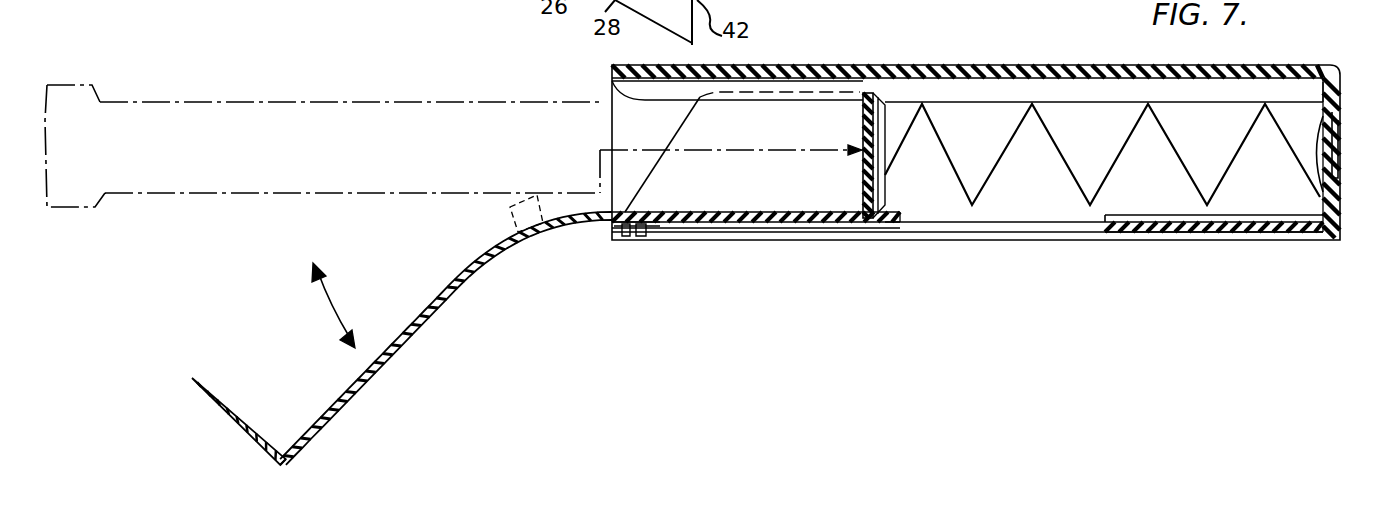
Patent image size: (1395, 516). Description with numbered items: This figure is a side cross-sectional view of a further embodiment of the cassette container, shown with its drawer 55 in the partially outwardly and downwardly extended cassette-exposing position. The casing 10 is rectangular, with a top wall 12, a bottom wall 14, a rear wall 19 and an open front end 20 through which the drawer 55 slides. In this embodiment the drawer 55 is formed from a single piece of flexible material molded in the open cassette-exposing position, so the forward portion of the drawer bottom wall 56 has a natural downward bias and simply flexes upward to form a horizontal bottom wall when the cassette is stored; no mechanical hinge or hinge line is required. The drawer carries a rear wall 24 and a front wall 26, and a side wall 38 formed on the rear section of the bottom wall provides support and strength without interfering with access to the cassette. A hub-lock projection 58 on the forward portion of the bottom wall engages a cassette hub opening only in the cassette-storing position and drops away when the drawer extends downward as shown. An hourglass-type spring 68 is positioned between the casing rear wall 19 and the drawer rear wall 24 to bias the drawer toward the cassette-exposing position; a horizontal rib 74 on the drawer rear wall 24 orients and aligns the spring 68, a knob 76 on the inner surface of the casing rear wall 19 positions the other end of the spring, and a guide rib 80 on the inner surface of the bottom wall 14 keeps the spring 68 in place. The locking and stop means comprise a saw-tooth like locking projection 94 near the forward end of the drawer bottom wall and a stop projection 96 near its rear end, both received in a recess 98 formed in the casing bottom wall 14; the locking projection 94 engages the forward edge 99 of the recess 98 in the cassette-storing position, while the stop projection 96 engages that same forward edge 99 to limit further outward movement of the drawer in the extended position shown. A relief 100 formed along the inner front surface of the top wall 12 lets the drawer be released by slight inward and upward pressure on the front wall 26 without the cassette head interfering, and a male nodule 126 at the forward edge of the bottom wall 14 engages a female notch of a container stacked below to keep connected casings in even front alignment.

The casing 10 is at (1082, 58).
The top wall 12 is at (1022, 77).
The bottom wall 14 is at (1178, 229).
The rear wall 19 is at (1338, 121).
The open front end 20 is at (637, 110).
The rear wall 24 is at (878, 97).
The front wall 26 is at (237, 423).
The side wall 38 is at (812, 190).
The drawer 55 is at (457, 305).
The drawer bottom wall 56 is at (386, 356).
The hub-lock projection 58 is at (515, 213).
The spring 68 is at (1165, 138).
The horizontal rib 74 is at (877, 192).
The knob 76 is at (1322, 163).
The guide rib 80 is at (1228, 217).
The locking projection 94 is at (318, 441).
The stop projection 96 is at (648, 229).
The recess 98 is at (987, 233).
The forward edge 99 is at (636, 233).
The relief 100 is at (770, 78).
The male nodule 126 is at (625, 231).